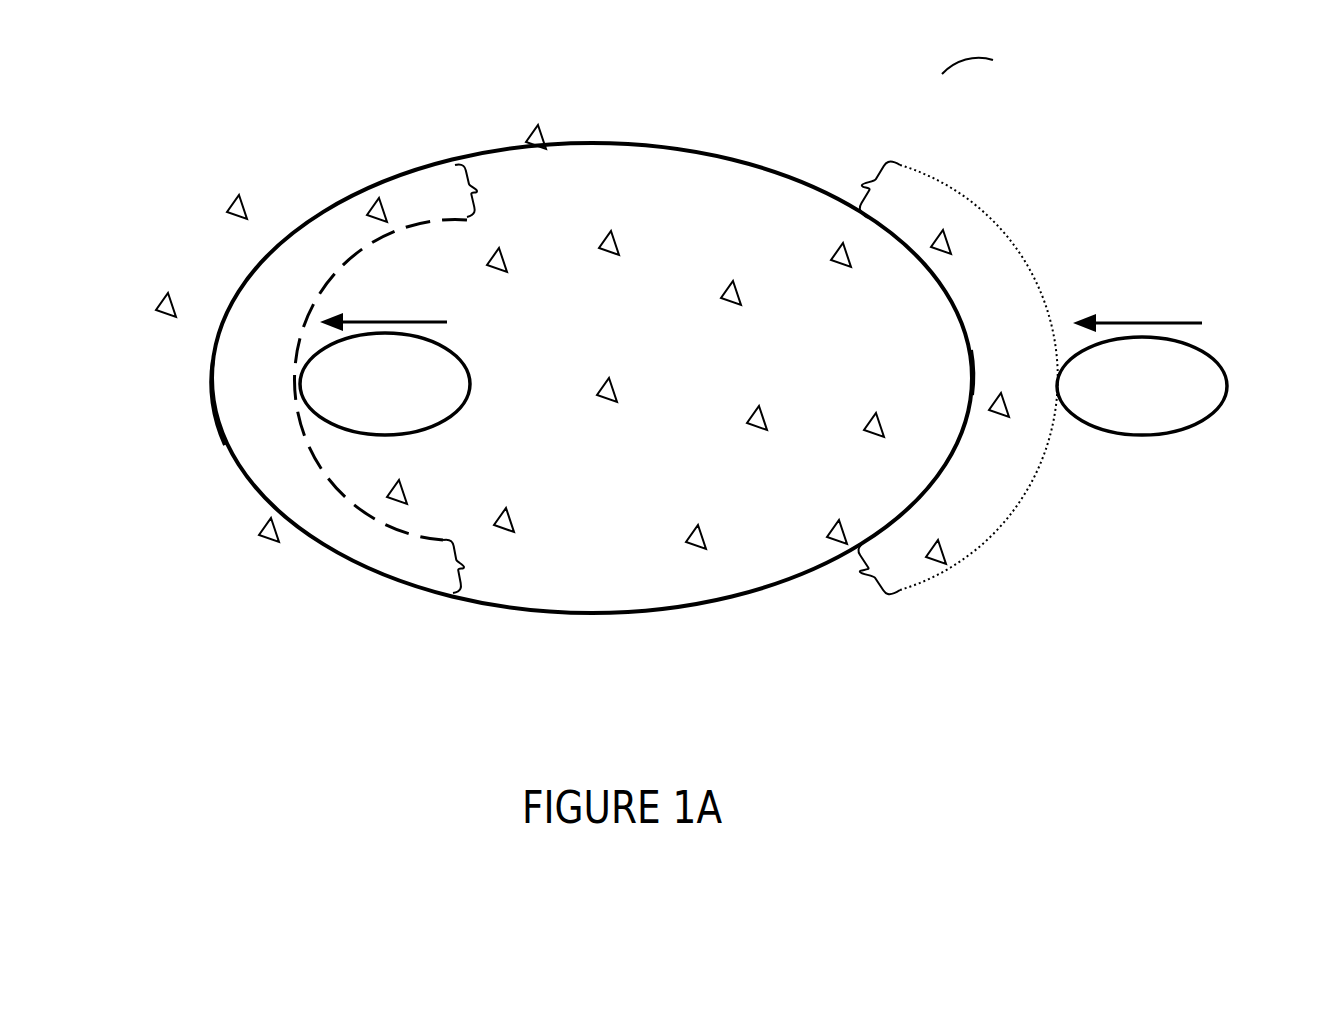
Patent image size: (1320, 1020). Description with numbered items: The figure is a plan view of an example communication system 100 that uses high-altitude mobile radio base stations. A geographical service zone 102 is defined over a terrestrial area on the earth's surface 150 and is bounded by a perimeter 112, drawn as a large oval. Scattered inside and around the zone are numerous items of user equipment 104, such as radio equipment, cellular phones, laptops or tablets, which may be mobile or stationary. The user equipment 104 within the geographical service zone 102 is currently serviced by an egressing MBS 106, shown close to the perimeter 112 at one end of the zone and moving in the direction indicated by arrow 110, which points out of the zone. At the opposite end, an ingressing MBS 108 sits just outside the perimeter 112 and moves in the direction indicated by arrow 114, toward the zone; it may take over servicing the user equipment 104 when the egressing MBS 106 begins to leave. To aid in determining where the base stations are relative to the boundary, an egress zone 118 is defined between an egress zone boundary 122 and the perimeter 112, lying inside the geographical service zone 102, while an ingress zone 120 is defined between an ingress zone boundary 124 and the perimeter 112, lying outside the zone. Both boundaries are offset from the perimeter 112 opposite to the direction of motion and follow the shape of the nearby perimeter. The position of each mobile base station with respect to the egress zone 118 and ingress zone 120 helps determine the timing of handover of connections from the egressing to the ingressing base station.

The communication system 100 is at (942, 74).
The geographical service zone 102 is at (700, 138).
The user equipment 104 is at (623, 212).
The egressing MBS 106 is at (440, 423).
The ingressing MBS 108 is at (1177, 432).
The arrow 110 is at (383, 318).
The perimeter 112 is at (227, 447).
The arrow 114 is at (1120, 320).
The egress zone 118 is at (478, 379).
The ingress zone 120 is at (863, 379).
The egress zone boundary 122 is at (407, 240).
The ingress zone boundary 124 is at (1045, 438).
The earth's surface 150 is at (414, 131).